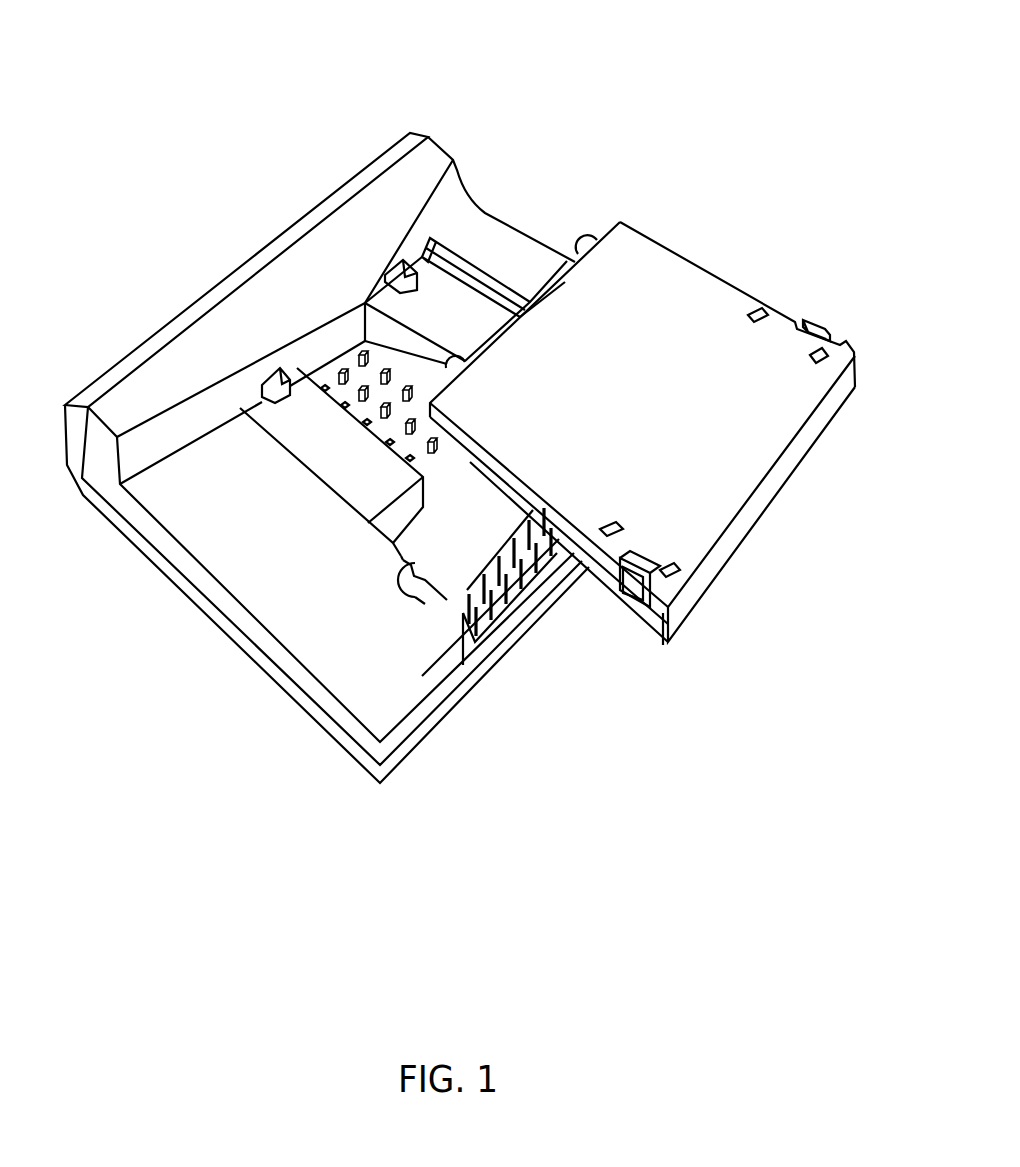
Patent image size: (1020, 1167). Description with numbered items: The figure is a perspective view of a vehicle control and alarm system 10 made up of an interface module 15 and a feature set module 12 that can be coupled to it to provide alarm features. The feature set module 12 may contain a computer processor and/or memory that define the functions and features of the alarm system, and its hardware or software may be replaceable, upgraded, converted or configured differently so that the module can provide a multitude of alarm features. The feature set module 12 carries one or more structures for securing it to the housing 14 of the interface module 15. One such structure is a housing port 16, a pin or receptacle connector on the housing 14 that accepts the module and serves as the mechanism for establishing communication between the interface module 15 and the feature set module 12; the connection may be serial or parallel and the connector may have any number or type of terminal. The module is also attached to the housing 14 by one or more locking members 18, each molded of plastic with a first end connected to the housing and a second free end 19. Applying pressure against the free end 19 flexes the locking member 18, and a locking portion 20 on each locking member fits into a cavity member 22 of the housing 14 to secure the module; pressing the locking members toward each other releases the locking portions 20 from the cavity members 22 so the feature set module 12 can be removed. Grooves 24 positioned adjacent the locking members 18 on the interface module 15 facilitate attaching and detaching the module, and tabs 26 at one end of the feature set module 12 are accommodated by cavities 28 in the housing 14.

The vehicle control and alarm system 10 is at (665, 49).
The feature set module 12 is at (707, 250).
The housing 14 is at (210, 610).
The interface module 15 is at (250, 232).
The housing port 16 is at (485, 617).
The locking member 18 is at (813, 317).
The free end 19 is at (622, 578).
The locking portion 20 is at (626, 606).
The cavity member 22 is at (417, 597).
The groove 24 is at (400, 593).
The tab 26 is at (457, 363).
The cavity 28 is at (267, 382).